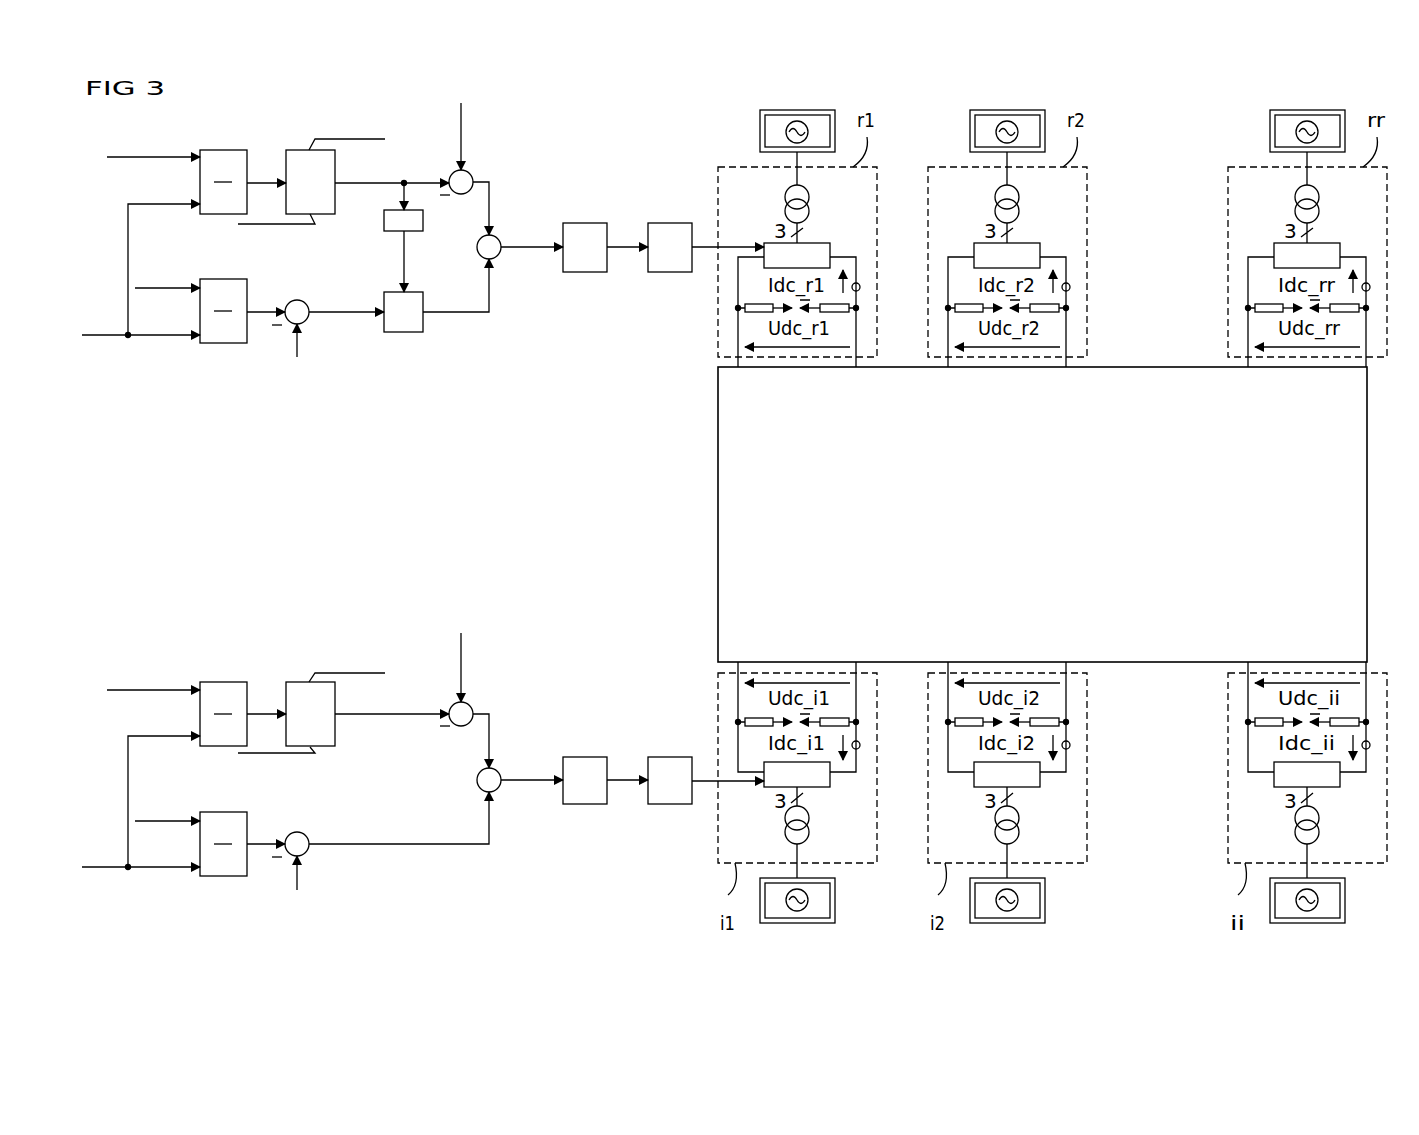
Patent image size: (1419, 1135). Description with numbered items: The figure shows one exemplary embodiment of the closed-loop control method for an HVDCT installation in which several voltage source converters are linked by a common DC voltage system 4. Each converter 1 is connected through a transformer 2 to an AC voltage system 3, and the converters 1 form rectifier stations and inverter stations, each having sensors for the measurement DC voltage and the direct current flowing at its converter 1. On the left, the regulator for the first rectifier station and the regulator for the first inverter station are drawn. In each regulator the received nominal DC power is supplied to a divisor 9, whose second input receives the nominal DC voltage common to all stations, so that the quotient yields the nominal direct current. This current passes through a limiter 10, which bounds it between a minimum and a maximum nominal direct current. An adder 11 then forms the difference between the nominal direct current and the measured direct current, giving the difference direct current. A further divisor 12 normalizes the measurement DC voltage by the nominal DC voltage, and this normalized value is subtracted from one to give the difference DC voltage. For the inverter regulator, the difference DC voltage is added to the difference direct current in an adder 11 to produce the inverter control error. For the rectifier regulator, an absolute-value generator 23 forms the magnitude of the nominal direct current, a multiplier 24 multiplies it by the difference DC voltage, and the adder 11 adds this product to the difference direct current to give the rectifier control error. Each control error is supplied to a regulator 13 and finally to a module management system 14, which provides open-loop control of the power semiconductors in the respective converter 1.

The converter 1 is at (830, 247).
The transformer 2 is at (810, 212).
The AC voltage system 3 is at (760, 118).
The DC voltage system 4 is at (719, 440).
The divisor 9 is at (225, 150).
The limiter 10 is at (290, 150).
The adder 11 is at (303, 333).
The divisor 12 is at (218, 343).
The regulator 13 is at (588, 223).
The module management system 14 is at (673, 223).
The absolute-value generator 23 is at (420, 232).
The multiplier 24 is at (398, 332).